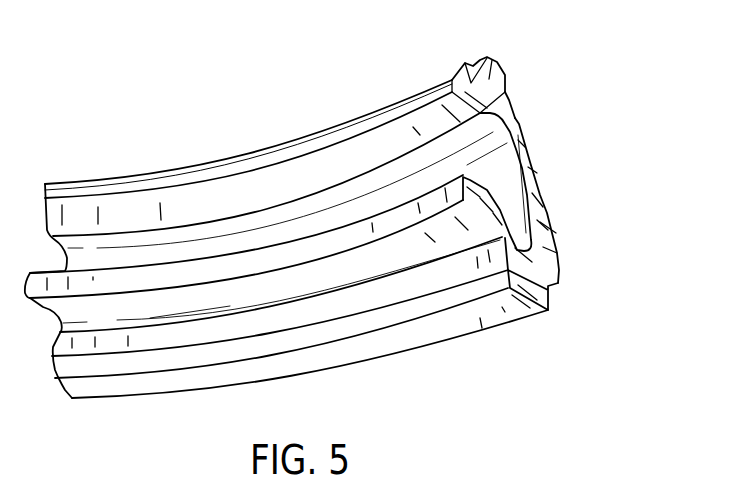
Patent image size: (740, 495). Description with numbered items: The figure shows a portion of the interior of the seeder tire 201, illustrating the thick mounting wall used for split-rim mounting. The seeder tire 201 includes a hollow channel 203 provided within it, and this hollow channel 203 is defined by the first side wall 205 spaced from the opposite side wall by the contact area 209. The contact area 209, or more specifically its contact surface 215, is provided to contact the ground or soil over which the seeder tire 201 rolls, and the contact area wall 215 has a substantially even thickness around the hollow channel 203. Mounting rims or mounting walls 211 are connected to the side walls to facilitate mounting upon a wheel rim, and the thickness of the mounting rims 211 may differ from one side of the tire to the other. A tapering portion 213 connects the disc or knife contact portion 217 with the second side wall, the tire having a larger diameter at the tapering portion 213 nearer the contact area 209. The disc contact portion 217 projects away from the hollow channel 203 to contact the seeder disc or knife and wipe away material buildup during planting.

The seeder tire 201 is at (233, 90).
The hollow channel 203 is at (498, 178).
The first side wall 205 is at (480, 317).
The contact area 209 is at (543, 247).
The mounting rim 211 is at (175, 307).
The tapering portion 213 is at (508, 92).
The contact surface 215 is at (538, 177).
The disc contact portion 217 is at (497, 62).